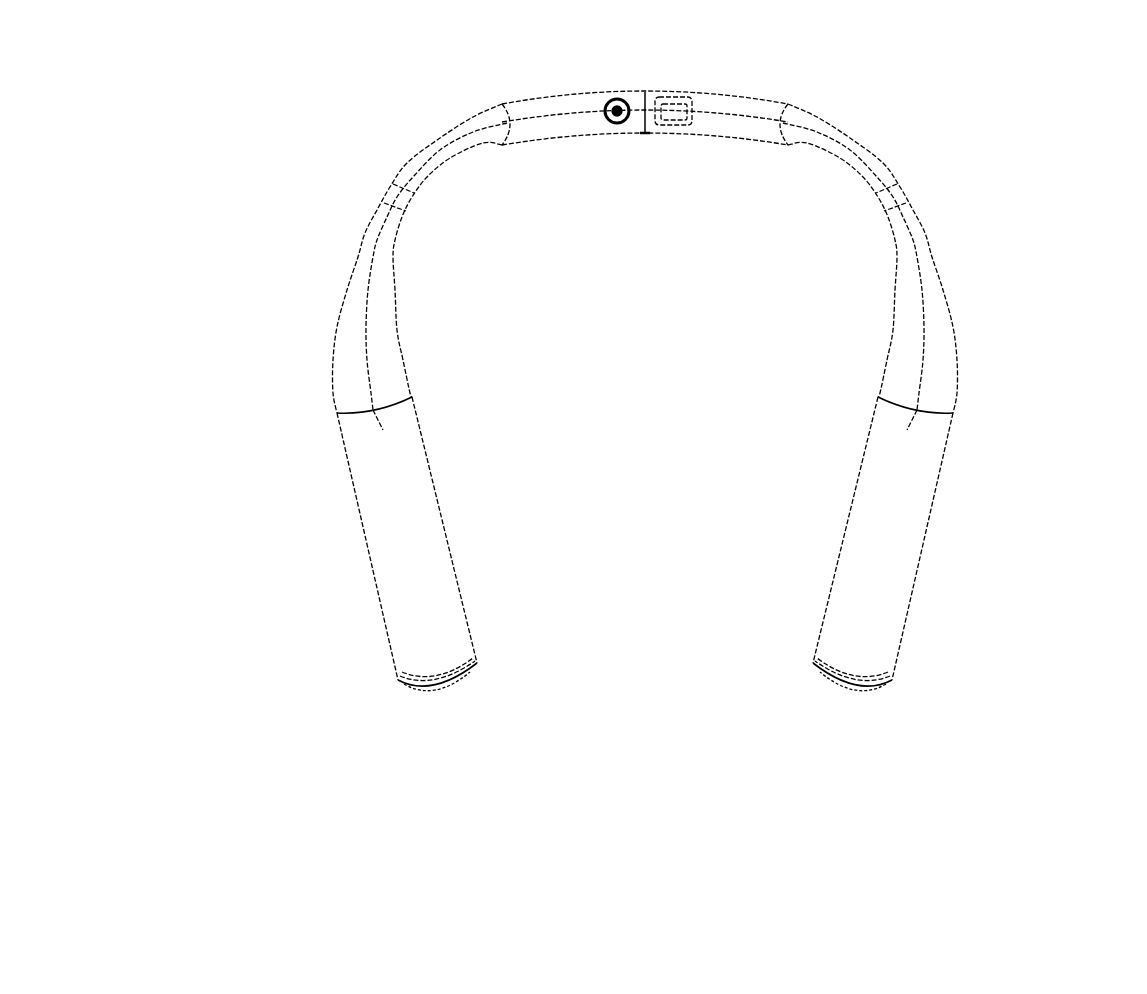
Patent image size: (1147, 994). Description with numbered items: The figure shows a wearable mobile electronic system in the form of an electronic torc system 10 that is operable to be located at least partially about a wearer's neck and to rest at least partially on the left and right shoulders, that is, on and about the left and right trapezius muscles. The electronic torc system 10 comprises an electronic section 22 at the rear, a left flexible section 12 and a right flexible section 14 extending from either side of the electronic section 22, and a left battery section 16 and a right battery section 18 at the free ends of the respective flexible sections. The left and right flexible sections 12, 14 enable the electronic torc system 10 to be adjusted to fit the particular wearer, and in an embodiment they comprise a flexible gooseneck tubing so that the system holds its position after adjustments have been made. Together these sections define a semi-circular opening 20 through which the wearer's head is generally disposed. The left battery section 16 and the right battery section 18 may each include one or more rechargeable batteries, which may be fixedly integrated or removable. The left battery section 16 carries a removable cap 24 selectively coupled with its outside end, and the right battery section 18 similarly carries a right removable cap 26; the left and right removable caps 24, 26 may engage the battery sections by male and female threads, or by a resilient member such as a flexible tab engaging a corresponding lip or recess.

The electronic torc system 10 is at (326, 116).
The left flexible section 12 is at (852, 93).
The right flexible section 14 is at (442, 100).
The left battery section 16 is at (963, 410).
The right battery section 18 is at (322, 422).
The semi-circular opening 20 is at (676, 372).
The electronic section 22 is at (826, 81).
The removable cap 24 is at (845, 683).
The right removable cap 26 is at (443, 683).